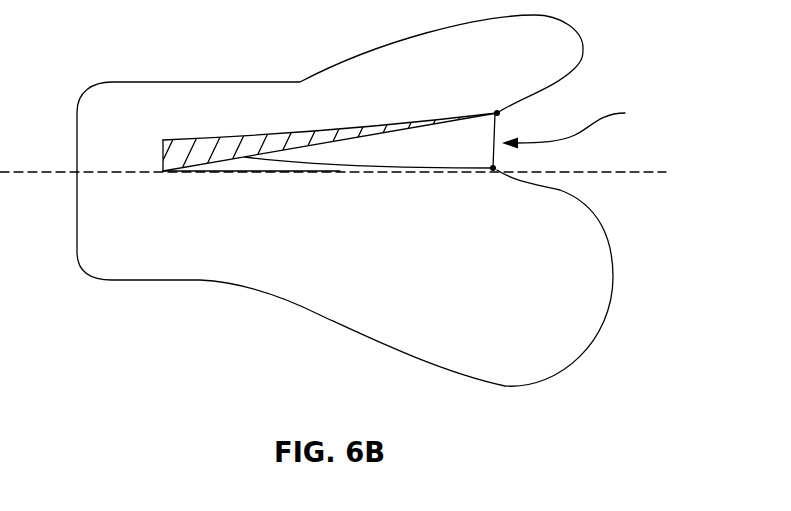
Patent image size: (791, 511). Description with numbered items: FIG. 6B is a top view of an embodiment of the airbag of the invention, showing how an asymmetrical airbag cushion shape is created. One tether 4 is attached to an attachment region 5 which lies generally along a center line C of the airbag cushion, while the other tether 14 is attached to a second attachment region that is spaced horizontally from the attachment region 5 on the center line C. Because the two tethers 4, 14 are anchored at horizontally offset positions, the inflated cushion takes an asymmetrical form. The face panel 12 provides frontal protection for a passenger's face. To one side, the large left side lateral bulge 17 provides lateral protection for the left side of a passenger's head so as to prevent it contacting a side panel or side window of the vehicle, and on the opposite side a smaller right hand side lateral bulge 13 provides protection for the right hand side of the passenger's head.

The tether 4 is at (438, 172).
The attachment region 5 is at (499, 114).
The face panel 12 is at (582, 125).
The right hand side lateral bulge 13 is at (583, 44).
The tether 14 is at (428, 121).
The left side lateral bulge 17 is at (613, 287).
The center line C is at (650, 172).